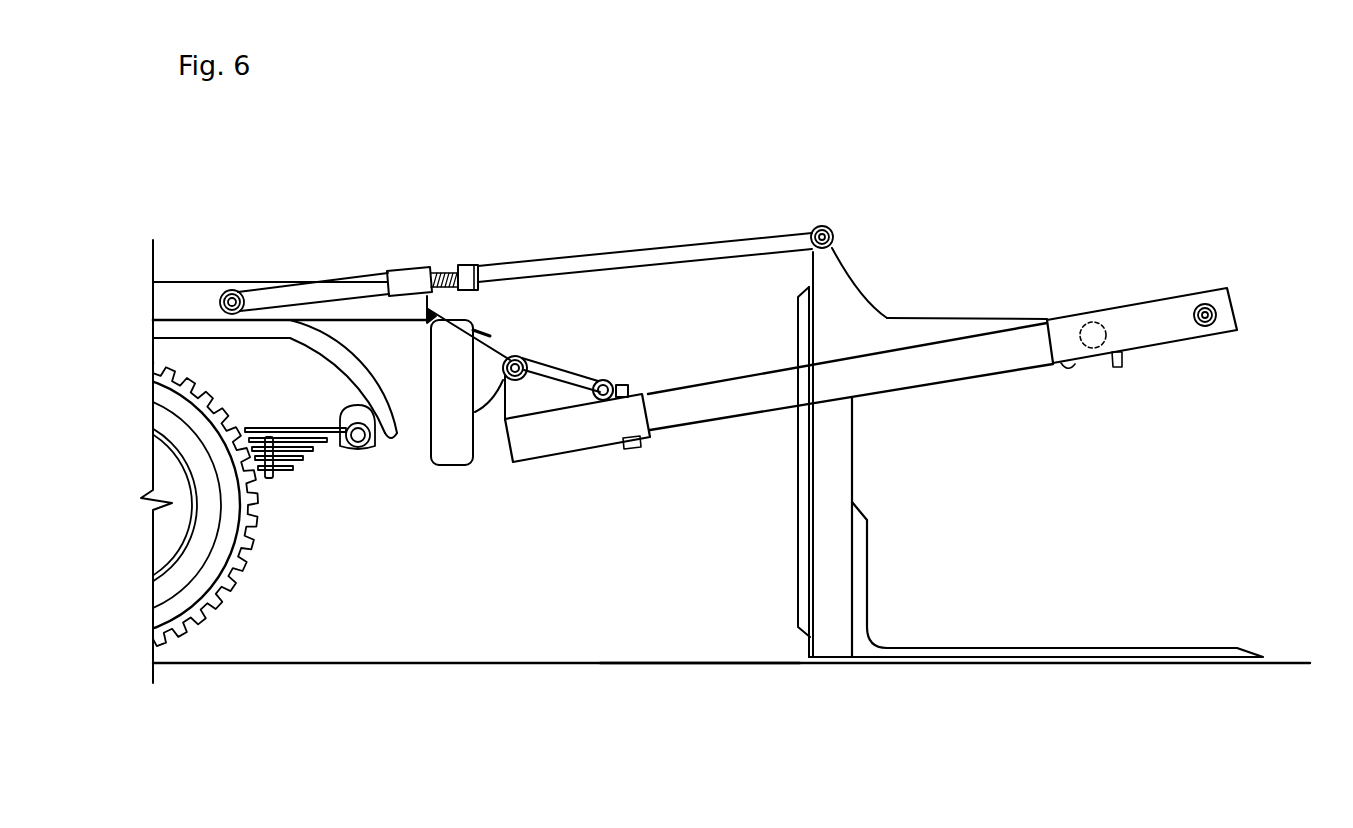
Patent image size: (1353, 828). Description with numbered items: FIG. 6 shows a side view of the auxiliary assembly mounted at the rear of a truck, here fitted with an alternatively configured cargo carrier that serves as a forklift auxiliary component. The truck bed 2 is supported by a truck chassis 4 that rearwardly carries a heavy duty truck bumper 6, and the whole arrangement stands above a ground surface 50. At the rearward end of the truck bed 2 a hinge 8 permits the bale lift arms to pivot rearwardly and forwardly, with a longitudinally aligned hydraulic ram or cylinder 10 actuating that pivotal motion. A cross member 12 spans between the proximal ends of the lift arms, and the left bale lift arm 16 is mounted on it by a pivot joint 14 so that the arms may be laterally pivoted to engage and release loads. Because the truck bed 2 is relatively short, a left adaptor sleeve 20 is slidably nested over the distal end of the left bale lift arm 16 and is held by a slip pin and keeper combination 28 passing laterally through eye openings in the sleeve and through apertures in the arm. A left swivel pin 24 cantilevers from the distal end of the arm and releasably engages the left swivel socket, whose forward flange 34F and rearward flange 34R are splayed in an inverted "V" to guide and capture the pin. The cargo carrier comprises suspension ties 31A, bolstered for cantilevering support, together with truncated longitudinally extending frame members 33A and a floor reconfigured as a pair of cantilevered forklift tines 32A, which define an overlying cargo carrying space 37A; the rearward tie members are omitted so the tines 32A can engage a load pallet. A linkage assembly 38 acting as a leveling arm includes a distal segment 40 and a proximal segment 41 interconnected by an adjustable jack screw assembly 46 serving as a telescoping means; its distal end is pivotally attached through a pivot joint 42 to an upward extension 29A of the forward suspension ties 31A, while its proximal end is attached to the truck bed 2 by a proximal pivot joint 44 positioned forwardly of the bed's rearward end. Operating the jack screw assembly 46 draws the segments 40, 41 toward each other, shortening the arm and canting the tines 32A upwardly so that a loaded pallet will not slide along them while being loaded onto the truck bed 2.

The truck bed 2 is at (182, 300).
The truck chassis 4 is at (420, 420).
The heavy duty truck bumper 6 is at (453, 455).
The hinge 8 is at (505, 355).
The hydraulic ram or cylinder 10 is at (533, 352).
The cross member 12 is at (582, 435).
The pivot joint 14 is at (635, 385).
The left bale lift arm 16 is at (770, 402).
The left adaptor sleeve 20 is at (1152, 327).
The left swivel pin 24 is at (1093, 338).
The slip pin and keeper combination 28 is at (1207, 302).
The upward extension 29A is at (835, 282).
The suspension ties 31A is at (835, 480).
The cantilevered forklift tines 32A is at (1070, 648).
The longitudinally extending frame members 33A is at (940, 323).
The forward flange of left swivel socket 34F is at (1068, 367).
The rearward flange of left swivel socket 34R is at (1118, 367).
The cargo carrying space 37A is at (987, 523).
The linkage assembly 38 is at (544, 238).
The distal segment 40 is at (617, 258).
The proximal segment 41 is at (347, 290).
The pivot joint 42 is at (825, 227).
The proximal pivot joint 44 is at (238, 293).
The adjustable jack screw assembly 46 is at (470, 263).
The ground surface 50 is at (635, 663).